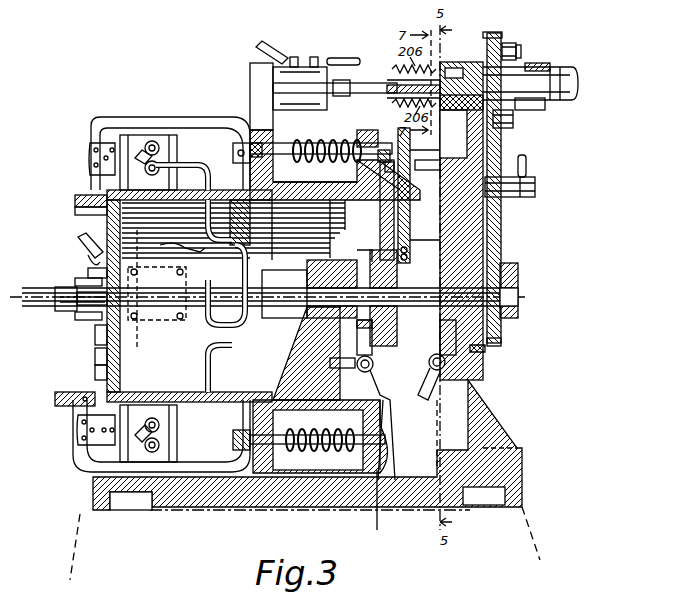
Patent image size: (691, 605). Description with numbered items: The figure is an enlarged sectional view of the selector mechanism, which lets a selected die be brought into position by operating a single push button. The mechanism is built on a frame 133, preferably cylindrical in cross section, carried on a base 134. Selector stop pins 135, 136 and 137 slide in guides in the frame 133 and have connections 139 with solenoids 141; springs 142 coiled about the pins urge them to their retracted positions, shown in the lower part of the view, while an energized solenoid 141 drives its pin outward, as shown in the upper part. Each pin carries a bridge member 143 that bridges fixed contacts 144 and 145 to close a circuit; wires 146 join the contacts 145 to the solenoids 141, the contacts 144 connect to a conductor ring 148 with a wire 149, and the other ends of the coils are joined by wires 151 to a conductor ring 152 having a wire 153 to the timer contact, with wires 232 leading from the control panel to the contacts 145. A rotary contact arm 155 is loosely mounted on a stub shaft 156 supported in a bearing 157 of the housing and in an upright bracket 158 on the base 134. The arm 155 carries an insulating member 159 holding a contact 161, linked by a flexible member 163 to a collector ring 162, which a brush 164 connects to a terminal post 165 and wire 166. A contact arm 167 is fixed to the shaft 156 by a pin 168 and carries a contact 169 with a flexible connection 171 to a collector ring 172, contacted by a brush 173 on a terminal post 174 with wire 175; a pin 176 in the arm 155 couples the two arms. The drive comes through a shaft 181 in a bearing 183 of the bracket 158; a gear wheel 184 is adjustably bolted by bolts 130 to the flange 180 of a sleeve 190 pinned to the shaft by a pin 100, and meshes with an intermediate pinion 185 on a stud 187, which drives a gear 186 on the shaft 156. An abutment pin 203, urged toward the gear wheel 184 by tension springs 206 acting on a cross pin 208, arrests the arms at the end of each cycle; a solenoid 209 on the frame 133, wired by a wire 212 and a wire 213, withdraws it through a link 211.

The pin 100 is at (546, 105).
The bolts 130 is at (521, 52).
The frame 133 is at (218, 190).
The base 134 is at (93, 493).
The selector stop pin 135 is at (392, 152).
The selector stop pin 136 is at (278, 318).
The selector stop pin 137 is at (377, 470).
The connections 139 is at (160, 117).
The solenoids 141 is at (137, 145).
The springs 142 is at (322, 140).
The bridge member 143 is at (75, 200).
The fixed contact 144 is at (100, 212).
The fixed contact 145 is at (88, 278).
The wires 146 is at (140, 163).
The conductor ring 148 is at (95, 352).
The wire 149 is at (95, 338).
The wires 151 is at (210, 165).
The conductor ring 152 is at (235, 330).
The wire 153 is at (178, 246).
The rotary contact arm 155 is at (385, 160).
The stub shaft 156 is at (517, 290).
The bearing 157 is at (310, 312).
The upright bracket 158 is at (500, 393).
The insulating member 159 is at (390, 175).
The contact 161 is at (380, 183).
The collector ring 162 is at (355, 245).
The flexible member 163 is at (325, 215).
The brush 164 is at (372, 344).
The terminal post 165 is at (374, 368).
The wire 166 is at (383, 395).
The contact arm 167 is at (412, 220).
The pin 168 is at (431, 360).
The contact 169 is at (428, 165).
The flexible connection 171 is at (415, 240).
The collector ring 172 is at (410, 253).
The brush 173 is at (486, 348).
The terminal post 174 is at (424, 376).
The wire 175 is at (408, 435).
The pin 176 is at (360, 197).
The flange 180 is at (516, 47).
The shaft 181 is at (578, 76).
The bearing 183 is at (462, 62).
The gear wheel 184 is at (500, 33).
The intermediate pinion 185 is at (501, 145).
The gear 186 is at (502, 342).
The stud 187 is at (536, 192).
The sleeve 190 is at (548, 63).
The abutment pin 203 is at (418, 80).
The tension springs 206 is at (414, 86).
The cross pin 208 is at (390, 70).
The solenoid 209 is at (303, 67).
The link 211 is at (373, 83).
The wire 212 is at (268, 40).
The wire 213 is at (350, 58).
The wires 232 is at (78, 240).